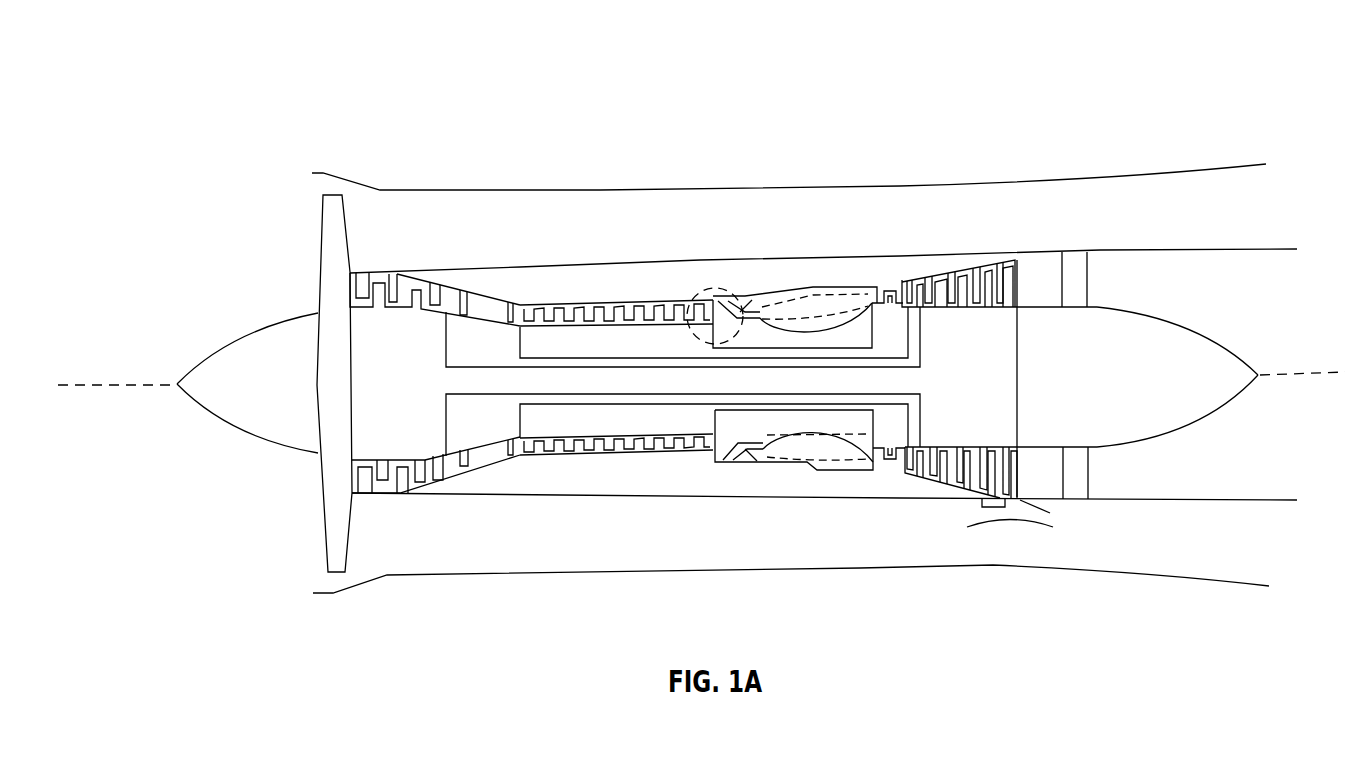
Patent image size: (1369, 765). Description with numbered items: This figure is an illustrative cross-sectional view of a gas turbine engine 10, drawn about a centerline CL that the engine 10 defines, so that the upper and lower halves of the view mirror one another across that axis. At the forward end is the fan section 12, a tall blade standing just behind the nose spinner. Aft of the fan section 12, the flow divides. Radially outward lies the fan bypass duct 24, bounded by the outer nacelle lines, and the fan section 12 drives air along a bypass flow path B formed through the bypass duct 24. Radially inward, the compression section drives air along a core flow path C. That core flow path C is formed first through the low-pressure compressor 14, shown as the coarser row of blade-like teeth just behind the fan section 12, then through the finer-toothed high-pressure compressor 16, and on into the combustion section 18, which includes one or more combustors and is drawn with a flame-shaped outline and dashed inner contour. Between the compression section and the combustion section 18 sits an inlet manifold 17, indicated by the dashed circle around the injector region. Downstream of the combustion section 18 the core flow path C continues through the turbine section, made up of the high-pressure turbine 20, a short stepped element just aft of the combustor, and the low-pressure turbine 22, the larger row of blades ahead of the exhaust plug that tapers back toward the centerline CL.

The gas turbine engine 10 is at (292, 88).
The fan section 12 is at (331, 240).
The low-pressure compressor 14 is at (388, 316).
The high-pressure compressor 16 is at (598, 308).
The inlet manifold 17 is at (723, 288).
The combustion section 18 is at (833, 293).
The high-pressure turbine 20 is at (890, 287).
The low-pressure turbine 22 is at (968, 258).
The fan bypass duct 24 is at (572, 208).
The bypass flow path B is at (448, 214).
The core flow path C is at (485, 312).
The centerline CL is at (122, 385).